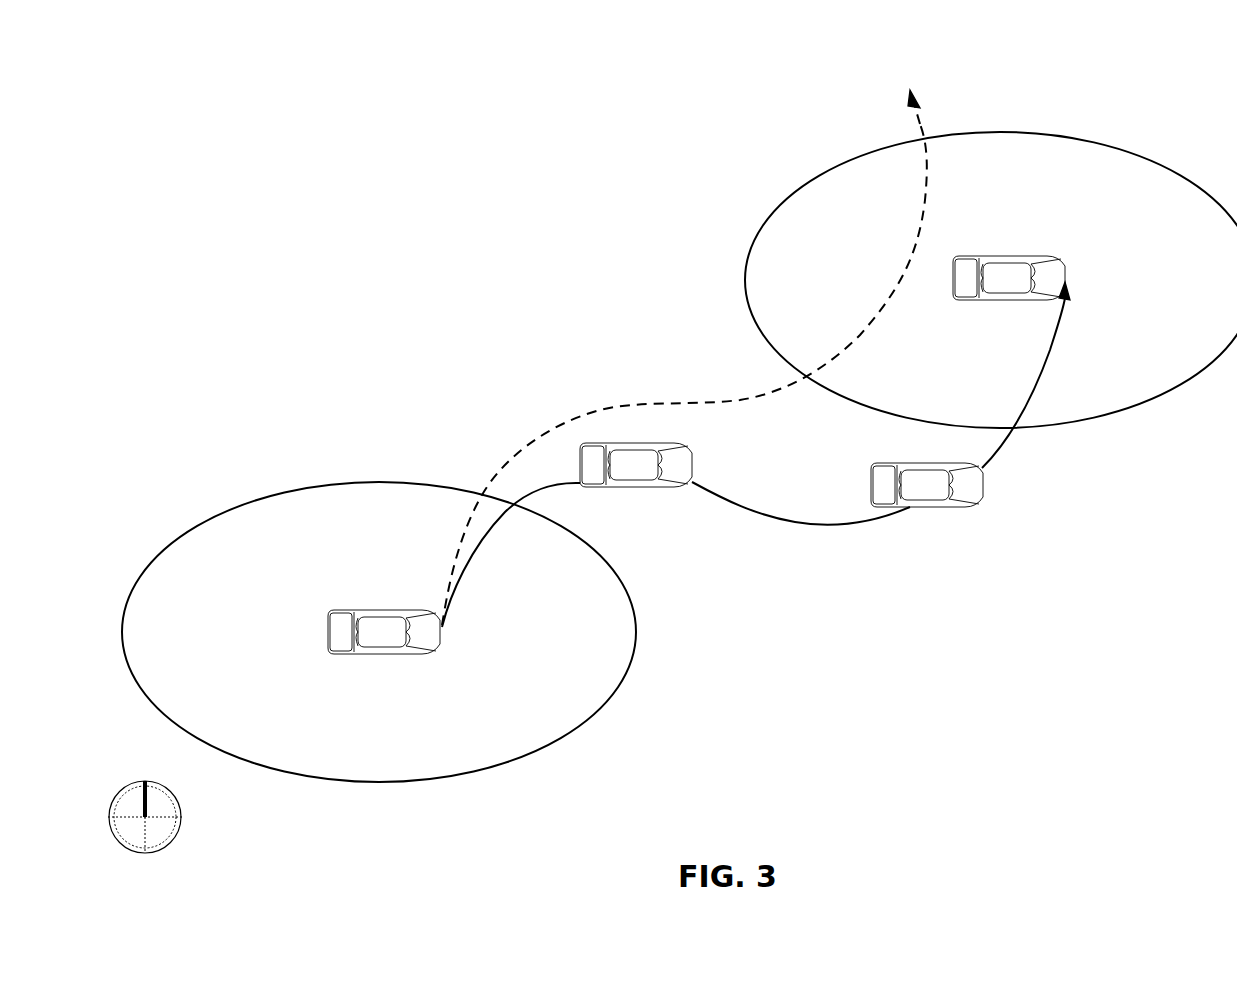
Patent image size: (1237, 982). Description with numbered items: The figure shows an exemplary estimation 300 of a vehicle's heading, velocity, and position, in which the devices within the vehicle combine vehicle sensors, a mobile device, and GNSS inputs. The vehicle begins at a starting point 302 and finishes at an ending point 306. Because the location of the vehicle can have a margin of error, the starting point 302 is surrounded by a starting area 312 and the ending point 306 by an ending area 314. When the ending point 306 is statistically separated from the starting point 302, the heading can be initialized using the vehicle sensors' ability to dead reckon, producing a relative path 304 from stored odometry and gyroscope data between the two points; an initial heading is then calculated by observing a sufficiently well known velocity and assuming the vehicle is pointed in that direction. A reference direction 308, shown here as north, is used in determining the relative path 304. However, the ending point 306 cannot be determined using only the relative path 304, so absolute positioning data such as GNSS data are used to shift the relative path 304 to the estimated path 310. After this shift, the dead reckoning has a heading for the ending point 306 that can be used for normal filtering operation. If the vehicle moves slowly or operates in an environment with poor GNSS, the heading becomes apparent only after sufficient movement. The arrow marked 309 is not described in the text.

The estimation 300 is at (1172, 93).
The starting point 302 is at (358, 609).
The relative path 304 is at (667, 404).
The ending point 306 is at (1040, 257).
The reference direction 308 is at (181, 815).
The alternative trajectory end 309 is at (903, 92).
The estimated path 310 is at (723, 489).
The starting area 312 is at (346, 484).
The ending area 314 is at (1022, 131).